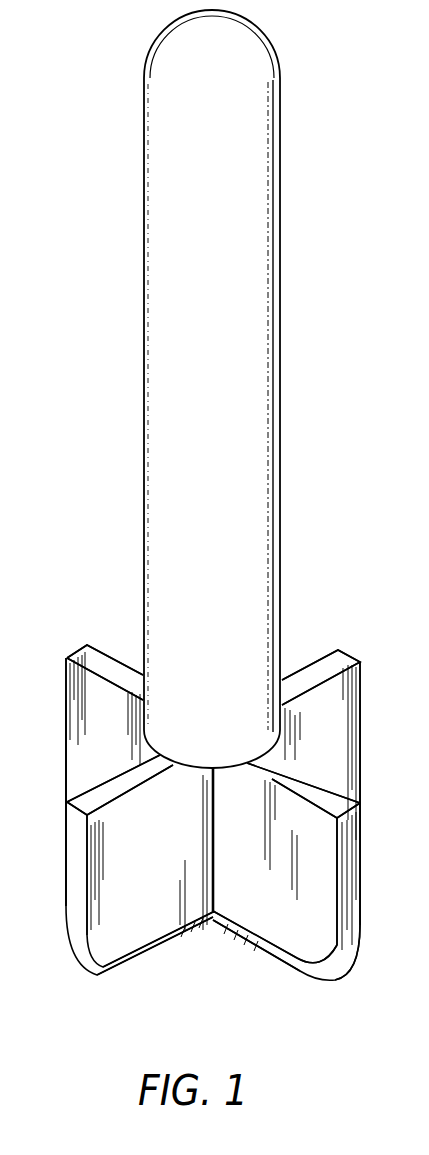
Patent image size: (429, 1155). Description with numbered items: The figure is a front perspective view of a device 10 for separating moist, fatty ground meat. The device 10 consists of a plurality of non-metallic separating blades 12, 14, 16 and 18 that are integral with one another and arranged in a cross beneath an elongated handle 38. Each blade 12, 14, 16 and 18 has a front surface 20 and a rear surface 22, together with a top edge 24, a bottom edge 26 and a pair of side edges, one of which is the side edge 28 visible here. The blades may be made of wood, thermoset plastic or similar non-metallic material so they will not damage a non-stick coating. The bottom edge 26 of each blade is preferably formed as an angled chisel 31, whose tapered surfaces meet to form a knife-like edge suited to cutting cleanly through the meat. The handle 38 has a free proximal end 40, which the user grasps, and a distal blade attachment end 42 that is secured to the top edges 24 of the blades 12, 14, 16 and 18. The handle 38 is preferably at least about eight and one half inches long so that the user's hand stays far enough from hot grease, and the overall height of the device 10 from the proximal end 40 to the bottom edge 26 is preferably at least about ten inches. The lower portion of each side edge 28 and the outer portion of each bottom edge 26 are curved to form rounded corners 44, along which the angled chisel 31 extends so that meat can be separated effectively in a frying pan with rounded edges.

The device 10 is at (225, 520).
The separating blade 12 is at (115, 713).
The separating blade 14 is at (114, 927).
The separating blade 16 is at (314, 836).
The separating blade 18 is at (336, 712).
The front surface 20 is at (100, 758).
The rear surface 22 is at (342, 735).
The top edge 24 is at (110, 668).
The bottom edge 26 is at (151, 962).
The side edge 28 is at (78, 650).
The angled chisel edge 31 is at (323, 973).
The elongated handle 38 is at (196, 430).
The free proximal end 40 is at (247, 33).
The distal blade attachment end 42 is at (233, 757).
The rounded corner 44 is at (347, 970).